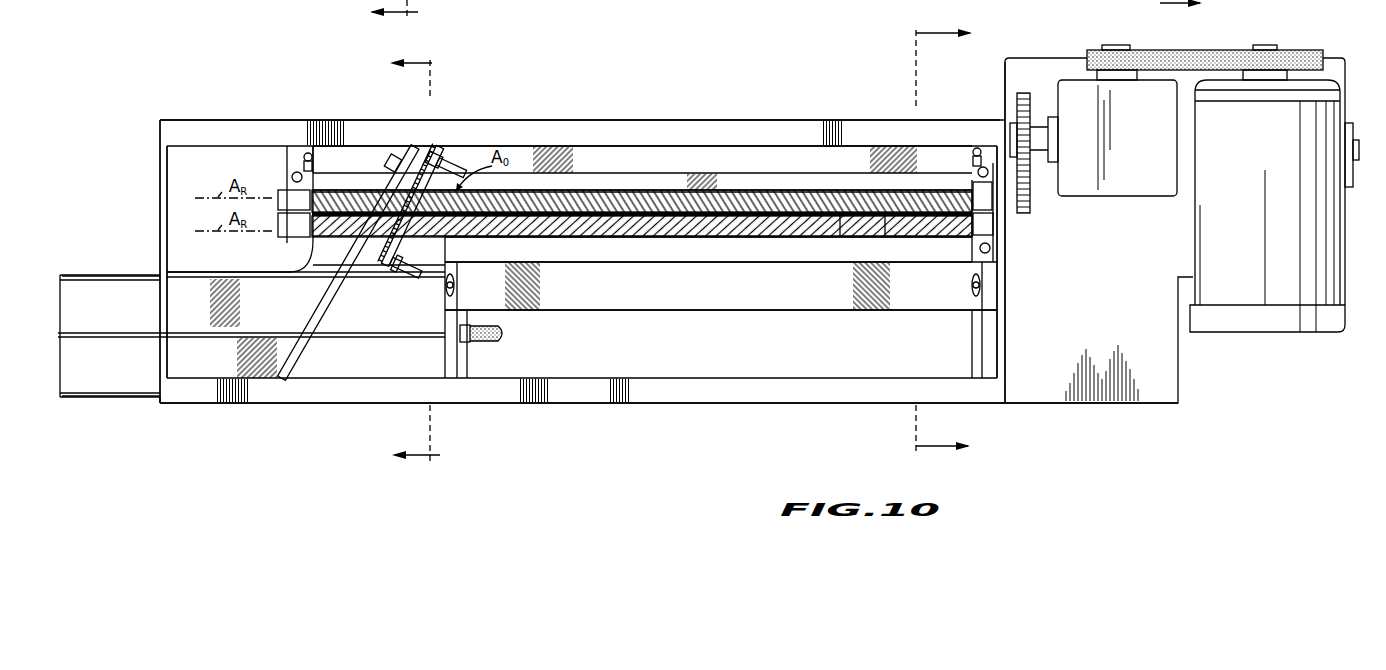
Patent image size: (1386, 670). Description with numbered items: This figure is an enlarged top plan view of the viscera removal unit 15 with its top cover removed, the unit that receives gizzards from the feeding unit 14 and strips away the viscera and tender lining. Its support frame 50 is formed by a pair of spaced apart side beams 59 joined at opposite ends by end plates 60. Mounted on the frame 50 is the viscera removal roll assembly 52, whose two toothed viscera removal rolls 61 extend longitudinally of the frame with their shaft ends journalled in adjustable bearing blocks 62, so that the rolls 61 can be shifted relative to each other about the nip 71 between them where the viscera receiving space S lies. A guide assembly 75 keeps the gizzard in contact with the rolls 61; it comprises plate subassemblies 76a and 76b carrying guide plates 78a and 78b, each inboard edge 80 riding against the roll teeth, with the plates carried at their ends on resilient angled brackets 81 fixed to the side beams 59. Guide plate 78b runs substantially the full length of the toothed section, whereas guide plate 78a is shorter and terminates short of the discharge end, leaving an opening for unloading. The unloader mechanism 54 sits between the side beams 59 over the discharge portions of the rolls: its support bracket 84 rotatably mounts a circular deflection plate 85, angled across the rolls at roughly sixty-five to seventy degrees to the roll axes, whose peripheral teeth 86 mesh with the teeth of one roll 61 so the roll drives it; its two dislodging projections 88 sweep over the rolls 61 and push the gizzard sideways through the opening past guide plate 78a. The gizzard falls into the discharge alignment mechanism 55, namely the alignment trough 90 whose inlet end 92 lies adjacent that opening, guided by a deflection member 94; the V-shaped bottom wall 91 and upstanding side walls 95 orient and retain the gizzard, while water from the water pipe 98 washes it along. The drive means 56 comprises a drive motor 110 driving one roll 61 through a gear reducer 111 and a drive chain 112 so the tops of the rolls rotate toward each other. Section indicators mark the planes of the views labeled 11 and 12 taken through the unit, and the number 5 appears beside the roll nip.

The support frame 50 is at (160, 121).
The side beams 59 is at (232, 122).
The end plates 60 is at (163, 190).
The alignment trough 90 is at (216, 272).
The deflection member 94 is at (315, 268).
The inlet end 92 is at (412, 362).
The bottom wall 91 is at (75, 282).
The side walls 95 is at (113, 276).
The discharge alignment mechanism 55 is at (142, 403).
The bearing blocks 62 is at (290, 192).
The plate subassembly 76b is at (652, 146).
The guide plate 78b is at (660, 181).
The guide assembly 75 is at (700, 146).
The viscera removal roll assembly 52 is at (748, 190).
The inboard edge 80 is at (615, 190).
The viscera removal rolls 61 is at (832, 190).
The thread segment 5 is at (850, 218).
The nip 71 is at (885, 215).
The guide plate 78a is at (700, 258).
The plate subassembly 76a is at (738, 310).
The angled brackets 81 is at (975, 327).
The water pipe 98 is at (477, 335).
The support bracket 84 is at (335, 285).
The unloader mechanism 54 is at (393, 152).
The deflection plate 85 is at (434, 150).
The teeth 86 is at (452, 160).
The dislodging projections 88 is at (448, 163).
The drive chain 112 is at (1033, 197).
The gear reducer 111 is at (1128, 195).
The drive means 56 is at (1305, 50).
The drive motor 110 is at (1330, 112).
The section line 12 is at (399, 261).
The viscera removal unit 15 is at (852, 70).
The section line 11 is at (953, 239).
The feeding unit 14 is at (1190, 6).